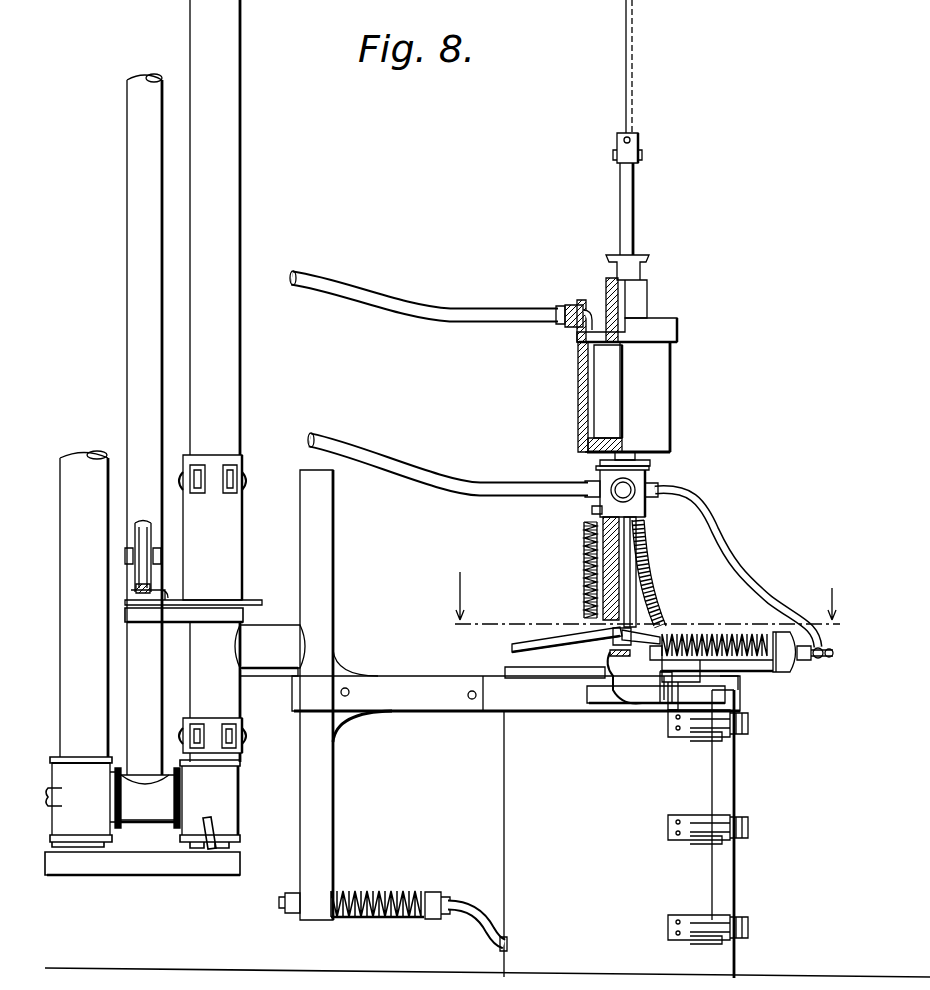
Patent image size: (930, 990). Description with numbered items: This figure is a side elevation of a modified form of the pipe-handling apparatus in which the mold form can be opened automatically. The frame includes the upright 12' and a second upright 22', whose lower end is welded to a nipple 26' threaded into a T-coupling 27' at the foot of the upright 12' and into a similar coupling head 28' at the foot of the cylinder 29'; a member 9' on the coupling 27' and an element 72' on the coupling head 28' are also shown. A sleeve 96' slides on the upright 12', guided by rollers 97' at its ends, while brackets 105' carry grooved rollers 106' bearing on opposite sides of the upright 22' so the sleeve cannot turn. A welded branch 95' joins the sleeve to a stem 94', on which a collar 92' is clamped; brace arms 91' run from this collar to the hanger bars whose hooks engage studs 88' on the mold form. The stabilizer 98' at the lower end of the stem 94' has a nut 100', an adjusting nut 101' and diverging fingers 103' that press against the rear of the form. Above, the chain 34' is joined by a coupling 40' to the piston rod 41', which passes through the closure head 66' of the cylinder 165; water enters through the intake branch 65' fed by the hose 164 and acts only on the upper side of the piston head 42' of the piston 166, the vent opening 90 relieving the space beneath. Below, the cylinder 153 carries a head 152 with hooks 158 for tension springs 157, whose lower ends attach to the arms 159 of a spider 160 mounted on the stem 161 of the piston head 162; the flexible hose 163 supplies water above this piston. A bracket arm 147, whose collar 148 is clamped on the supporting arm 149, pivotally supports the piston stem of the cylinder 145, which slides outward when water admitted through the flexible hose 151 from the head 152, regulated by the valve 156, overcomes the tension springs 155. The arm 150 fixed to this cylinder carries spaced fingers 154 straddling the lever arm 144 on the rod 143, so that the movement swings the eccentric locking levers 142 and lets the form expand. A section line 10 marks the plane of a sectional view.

The chain 34' is at (650, 66).
The coupling 40' is at (645, 146).
The piston rod 41' is at (640, 240).
The intake branch 65' is at (577, 300).
The hose 164 is at (466, 306).
The piston 166 is at (620, 336).
The closure head 66' is at (655, 321).
The cylinder 165 is at (666, 374).
The piston head 42' is at (607, 390).
The vent opening 90 is at (580, 440).
The supporting arm 149 is at (644, 456).
The collar 148 is at (656, 472).
The flexible hose 163 is at (478, 482).
The hooks 158 is at (592, 510).
The piston head 162 is at (603, 528).
The head 152 is at (645, 500).
The tension springs 157 is at (584, 566).
The stem 161 is at (640, 562).
The cylinder 153 is at (636, 590).
The arms 159 is at (562, 640).
The spider 160 is at (610, 646).
The bracket arm 147 is at (650, 614).
The cylinder 145 is at (742, 636).
The flexible hose 151 is at (772, 580).
The section line 10 is at (649, 592).
The tension springs 155 is at (752, 662).
The valve 156 is at (810, 662).
The arm 150 is at (700, 688).
The brace arms 91' is at (555, 705).
The studs 88' is at (601, 702).
The lever arm 144 is at (640, 705).
The fingers 154 is at (668, 704).
The rod 143 is at (716, 788).
The eccentric locking levers 142 is at (712, 915).
The collar 92' is at (516, 672).
The stem 94' is at (346, 695).
The welded branch 95' is at (305, 625).
The sleeve 96' is at (232, 604).
The rollers 97' is at (230, 597).
The grooved rollers 106' is at (179, 551).
The brackets 105' is at (193, 584).
The upright 22' is at (167, 429).
The upright 12' is at (233, 381).
The cylinder 29' is at (84, 582).
The coupling head 28' is at (85, 783).
The plug 72' is at (73, 795).
The nipple 26' is at (147, 805).
The T-coupling 27' is at (227, 804).
The handle 9' is at (233, 829).
The nut 100' is at (290, 921).
The stabilizer 98' is at (380, 889).
The nut 101' is at (454, 891).
The fingers 103' is at (502, 918).